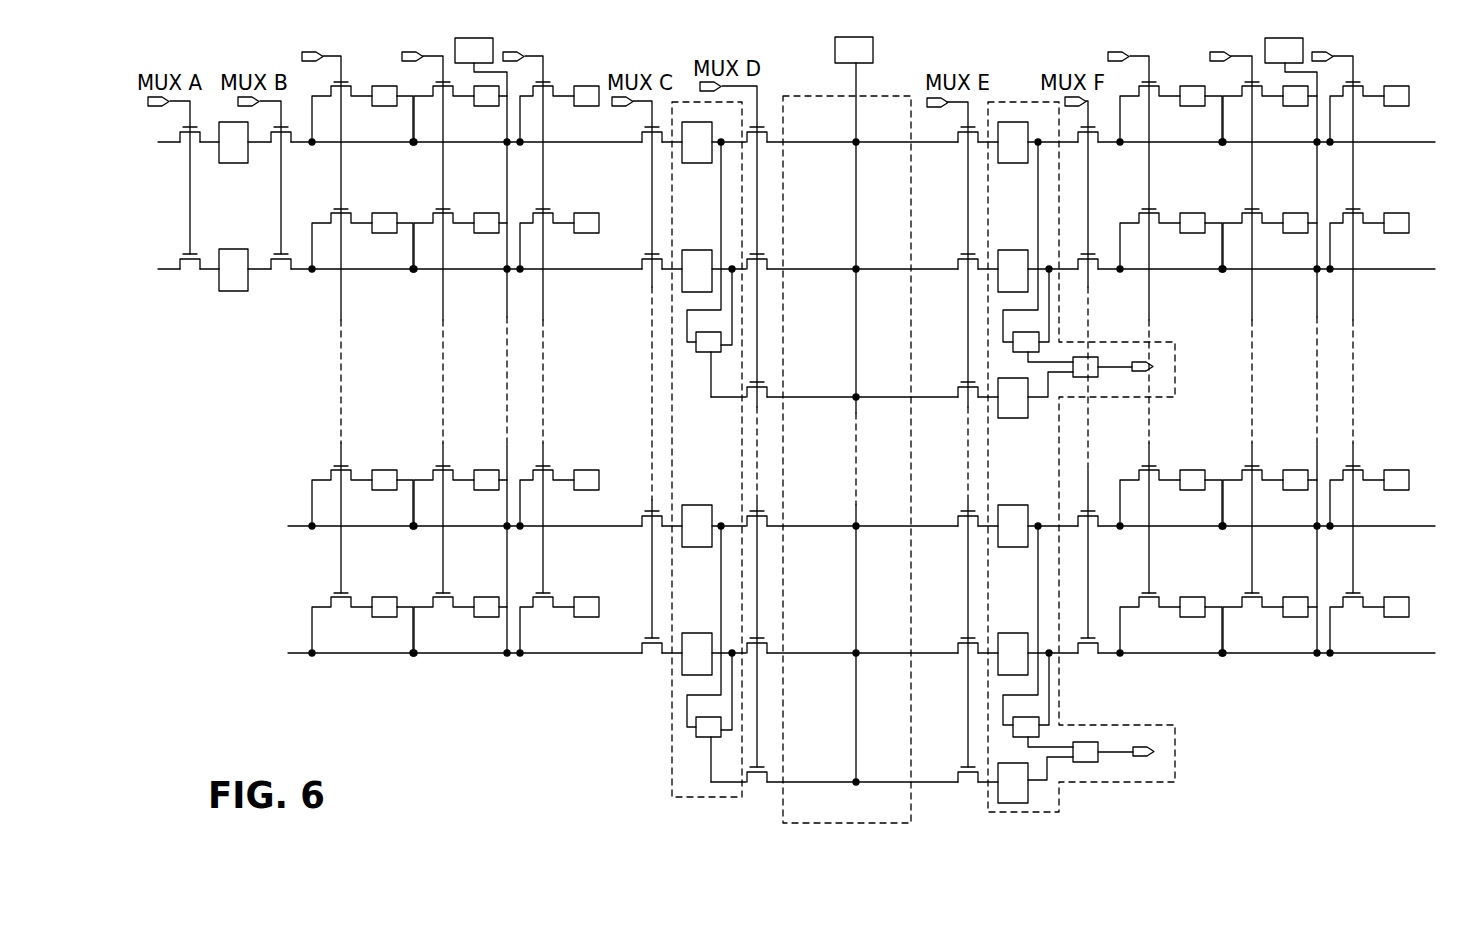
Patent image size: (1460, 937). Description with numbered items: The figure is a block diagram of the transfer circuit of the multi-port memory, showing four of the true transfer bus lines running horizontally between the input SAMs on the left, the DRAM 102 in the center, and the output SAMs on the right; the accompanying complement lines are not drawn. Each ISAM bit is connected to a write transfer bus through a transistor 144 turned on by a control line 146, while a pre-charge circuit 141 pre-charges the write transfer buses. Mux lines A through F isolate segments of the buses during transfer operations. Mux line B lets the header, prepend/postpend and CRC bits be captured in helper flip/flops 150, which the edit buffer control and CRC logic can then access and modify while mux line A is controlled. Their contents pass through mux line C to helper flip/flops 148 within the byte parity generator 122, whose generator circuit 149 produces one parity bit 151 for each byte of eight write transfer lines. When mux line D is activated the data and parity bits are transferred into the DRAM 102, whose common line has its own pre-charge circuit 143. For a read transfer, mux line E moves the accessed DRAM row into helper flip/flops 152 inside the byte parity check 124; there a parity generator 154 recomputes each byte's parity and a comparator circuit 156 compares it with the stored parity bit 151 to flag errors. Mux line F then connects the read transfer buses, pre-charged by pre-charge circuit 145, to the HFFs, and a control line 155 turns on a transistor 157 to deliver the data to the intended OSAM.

The dynamic random access memory 102 is at (805, 95).
The byte parity generator 122 is at (672, 797).
The byte parity check 124 is at (1014, 102).
The pre-charge circuit 141 is at (493, 45).
The pre-charge circuit 143 is at (873, 46).
The transistor 144 is at (350, 97).
The pre-charge circuit 145 is at (1303, 46).
The control line 146 is at (297, 54).
The helper flip/flop 148 is at (695, 250).
The generator circuit 149 is at (696, 346).
The helper flip/flop 150 is at (234, 249).
The parity bit 151 is at (704, 371).
The helper flip/flop 152 is at (1011, 250).
The parity generator 154 is at (1032, 334).
The control line 155 is at (1107, 54).
The comparator circuit 156 is at (1098, 357).
The transistor 157 is at (1160, 98).